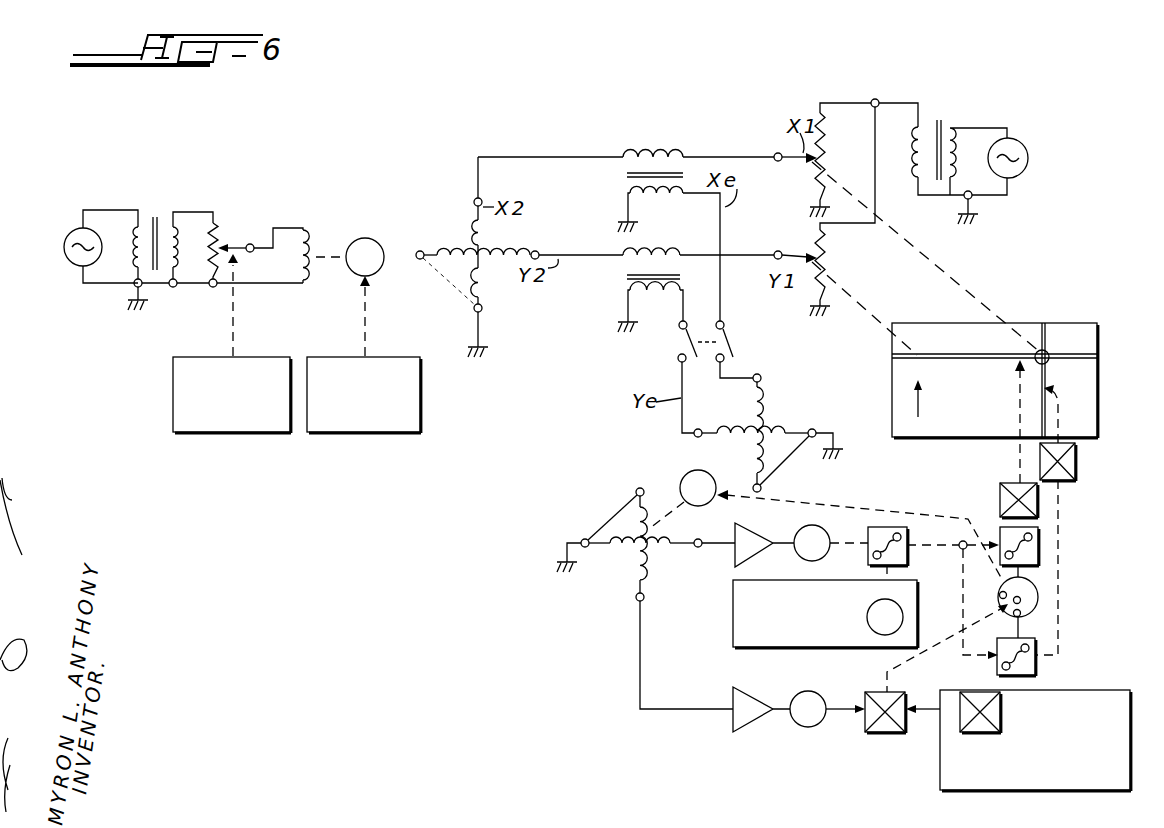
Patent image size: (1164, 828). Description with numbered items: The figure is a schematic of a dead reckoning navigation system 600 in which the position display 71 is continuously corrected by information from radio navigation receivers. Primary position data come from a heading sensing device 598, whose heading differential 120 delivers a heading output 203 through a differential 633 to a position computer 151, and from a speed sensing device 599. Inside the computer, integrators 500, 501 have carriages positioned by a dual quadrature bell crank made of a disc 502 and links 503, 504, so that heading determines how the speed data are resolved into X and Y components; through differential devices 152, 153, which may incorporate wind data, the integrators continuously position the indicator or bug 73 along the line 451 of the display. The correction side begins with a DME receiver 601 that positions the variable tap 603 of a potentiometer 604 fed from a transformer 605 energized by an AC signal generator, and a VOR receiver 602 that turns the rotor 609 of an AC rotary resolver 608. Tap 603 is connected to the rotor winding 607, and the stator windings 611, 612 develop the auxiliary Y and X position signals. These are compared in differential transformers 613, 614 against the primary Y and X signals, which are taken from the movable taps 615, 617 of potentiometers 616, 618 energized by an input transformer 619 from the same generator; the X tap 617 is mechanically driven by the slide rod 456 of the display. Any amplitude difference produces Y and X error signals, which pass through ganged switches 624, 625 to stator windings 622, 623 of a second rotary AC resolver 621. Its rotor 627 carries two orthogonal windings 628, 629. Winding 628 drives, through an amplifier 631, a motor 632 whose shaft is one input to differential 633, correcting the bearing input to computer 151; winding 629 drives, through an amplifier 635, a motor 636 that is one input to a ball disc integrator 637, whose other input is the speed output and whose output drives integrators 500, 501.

The dead reckoning navigation system 600 is at (493, 497).
The DME receiver 601 is at (230, 433).
The VOR receiver 602 is at (333, 433).
The variable tap 603 is at (253, 230).
The potentiometer 604 is at (217, 227).
The transformer 605 is at (153, 213).
The rotor winding 607 is at (317, 233).
The AC rotary resolver 608 is at (380, 234).
The rotor 609 is at (383, 272).
The stator winding 611 is at (456, 249).
The stator winding 612 is at (481, 281).
The differential transformer 613 is at (627, 278).
The differential transformer 614 is at (627, 175).
The movable tap 615 is at (797, 251).
The potentiometer 616 is at (825, 270).
The movable tap 617 is at (790, 150).
The potentiometer 618 is at (847, 149).
The input transformer 619 is at (940, 113).
The rotary AC resolver 621 is at (658, 474).
The stator winding 622 is at (727, 426).
The stator winding 623 is at (762, 410).
The switch 624 is at (688, 334).
The switch 625 is at (733, 329).
The rotor 627 is at (722, 462).
The rotor winding 628 is at (637, 563).
The rotor winding 629 is at (661, 546).
The amplifier 631 is at (752, 730).
The motor 632 is at (808, 728).
The differential 633 is at (895, 733).
The amplifier 635 is at (770, 523).
The motor 636 is at (817, 525).
The ball disc integrator 637 is at (890, 527).
The slide rod 456 is at (1047, 340).
The position display 71 is at (1070, 323).
The bug 73 is at (1037, 353).
The reference line 451 is at (982, 360).
The differential device 152 is at (1013, 483).
The differential device 153 is at (1077, 462).
The integrator 501 is at (1040, 537).
The link 503 is at (1012, 575).
The position computer 151 is at (1056, 596).
The disc 502 is at (1037, 608).
The link 504 is at (1020, 623).
The integrator 500 is at (1037, 663).
The speed sensing device 599 is at (783, 648).
The heading input shaft 203 is at (935, 707).
The heading differential 120 is at (978, 733).
The heading sensing device 598 is at (1073, 789).